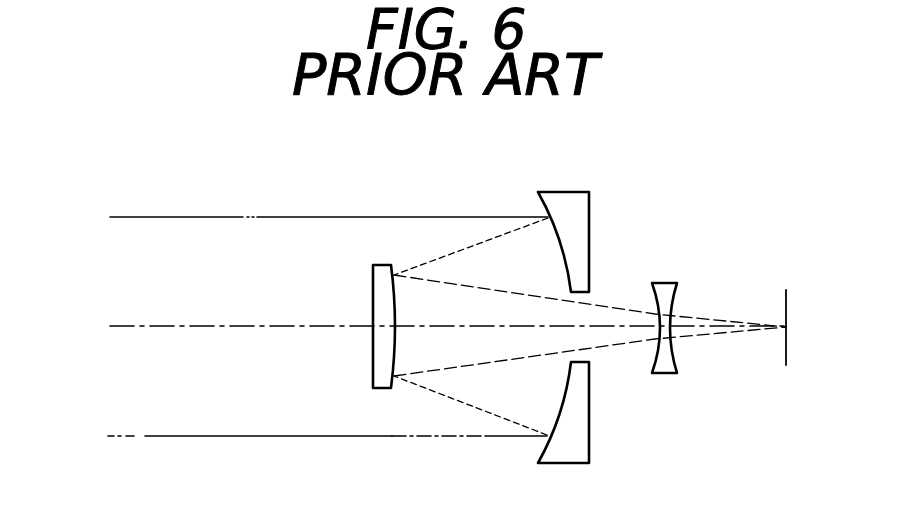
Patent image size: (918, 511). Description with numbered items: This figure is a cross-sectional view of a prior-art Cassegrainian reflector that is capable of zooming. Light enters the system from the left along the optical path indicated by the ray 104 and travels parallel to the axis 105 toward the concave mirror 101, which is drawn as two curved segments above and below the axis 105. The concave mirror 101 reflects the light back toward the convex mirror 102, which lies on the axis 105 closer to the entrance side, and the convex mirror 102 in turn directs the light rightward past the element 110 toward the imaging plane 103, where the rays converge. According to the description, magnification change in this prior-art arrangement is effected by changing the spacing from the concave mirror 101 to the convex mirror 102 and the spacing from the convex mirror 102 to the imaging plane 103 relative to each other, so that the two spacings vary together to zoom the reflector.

The concave mirror 101 is at (565, 191).
The convex mirror 102 is at (373, 270).
The imaging plane 103 is at (788, 300).
The incident parallel light beam 104 is at (163, 216).
The optical axis 105 is at (168, 325).
The concave lens 110 is at (676, 373).